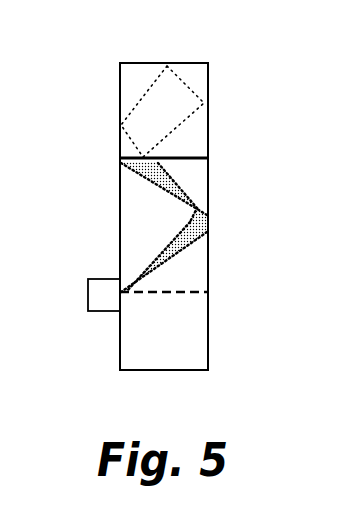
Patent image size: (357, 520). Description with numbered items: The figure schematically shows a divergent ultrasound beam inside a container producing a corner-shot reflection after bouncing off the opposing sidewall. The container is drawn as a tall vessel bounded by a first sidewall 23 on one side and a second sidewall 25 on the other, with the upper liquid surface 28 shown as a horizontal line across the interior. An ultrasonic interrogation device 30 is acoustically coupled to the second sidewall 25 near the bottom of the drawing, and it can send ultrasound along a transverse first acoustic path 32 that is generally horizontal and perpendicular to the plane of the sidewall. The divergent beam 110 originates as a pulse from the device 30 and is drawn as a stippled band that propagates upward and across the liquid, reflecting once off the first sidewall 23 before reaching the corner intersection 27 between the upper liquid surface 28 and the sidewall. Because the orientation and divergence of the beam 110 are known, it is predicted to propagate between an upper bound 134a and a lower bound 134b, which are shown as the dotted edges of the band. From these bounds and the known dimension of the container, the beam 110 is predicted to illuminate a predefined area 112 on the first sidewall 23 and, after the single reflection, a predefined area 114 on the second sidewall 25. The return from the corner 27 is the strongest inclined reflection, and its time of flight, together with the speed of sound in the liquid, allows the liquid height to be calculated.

The sidewall 23 is at (209, 74).
The sidewall 25 is at (119, 78).
The intersection 27 is at (119, 157).
The upper liquid surface 28 is at (188, 158).
The ultrasonic interrogation device 30 is at (93, 312).
The first acoustic path 32 is at (165, 295).
The divergent beam 110 is at (175, 255).
The predefined area 112 is at (215, 221).
The predefined area 114 is at (114, 150).
The upper bound 134a is at (172, 180).
The lower bound 134b is at (152, 193).